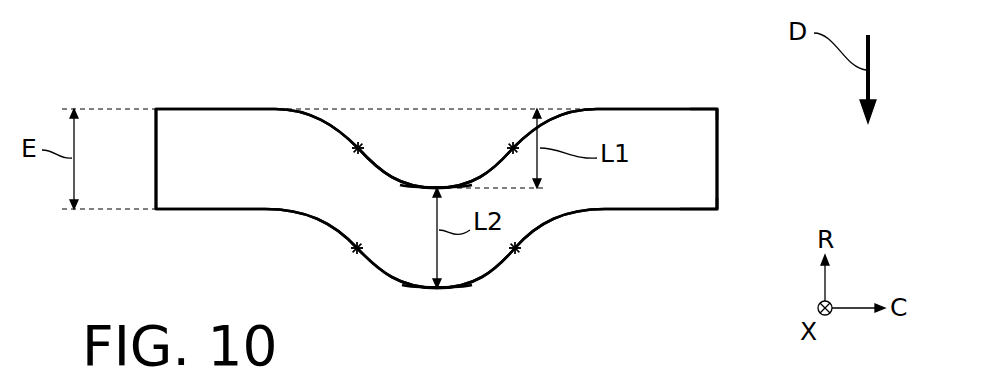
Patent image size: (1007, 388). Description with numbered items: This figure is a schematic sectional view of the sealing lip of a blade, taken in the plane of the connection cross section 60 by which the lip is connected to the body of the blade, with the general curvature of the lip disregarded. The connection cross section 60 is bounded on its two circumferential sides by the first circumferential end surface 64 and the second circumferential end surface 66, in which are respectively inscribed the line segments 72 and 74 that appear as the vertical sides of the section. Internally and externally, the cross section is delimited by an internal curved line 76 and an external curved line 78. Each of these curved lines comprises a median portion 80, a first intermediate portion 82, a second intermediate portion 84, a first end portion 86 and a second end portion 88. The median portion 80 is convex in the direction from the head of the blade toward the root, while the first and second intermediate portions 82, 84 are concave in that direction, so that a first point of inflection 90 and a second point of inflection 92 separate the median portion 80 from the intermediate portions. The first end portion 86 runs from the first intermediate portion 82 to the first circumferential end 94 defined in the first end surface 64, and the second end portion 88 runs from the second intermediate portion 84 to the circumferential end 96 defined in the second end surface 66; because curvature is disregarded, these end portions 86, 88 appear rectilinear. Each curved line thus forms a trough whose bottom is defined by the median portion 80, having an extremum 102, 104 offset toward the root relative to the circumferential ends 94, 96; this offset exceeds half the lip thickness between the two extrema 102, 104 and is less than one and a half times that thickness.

The connection cross section 60 is at (298, 163).
The first circumferential end surface 64 is at (795, 159).
The second circumferential end surface 66 is at (205, 114).
The line segment 72 is at (717, 153).
The line segment 74 is at (157, 155).
The internal curved line 76 is at (690, 210).
The external curved line 78 is at (700, 108).
The median portion 80 is at (476, 178).
The first intermediate portion 82 is at (556, 112).
The second intermediate portion 84 is at (334, 117).
The first end portion 86 is at (668, 108).
The second end portion 88 is at (185, 108).
The first point of inflection 90 is at (512, 146).
The second point of inflection 92 is at (360, 146).
The first circumferential end 94 is at (717, 109).
The circumferential end 96 is at (156, 108).
The extremum 102 is at (436, 289).
The extremum 104 is at (437, 186).